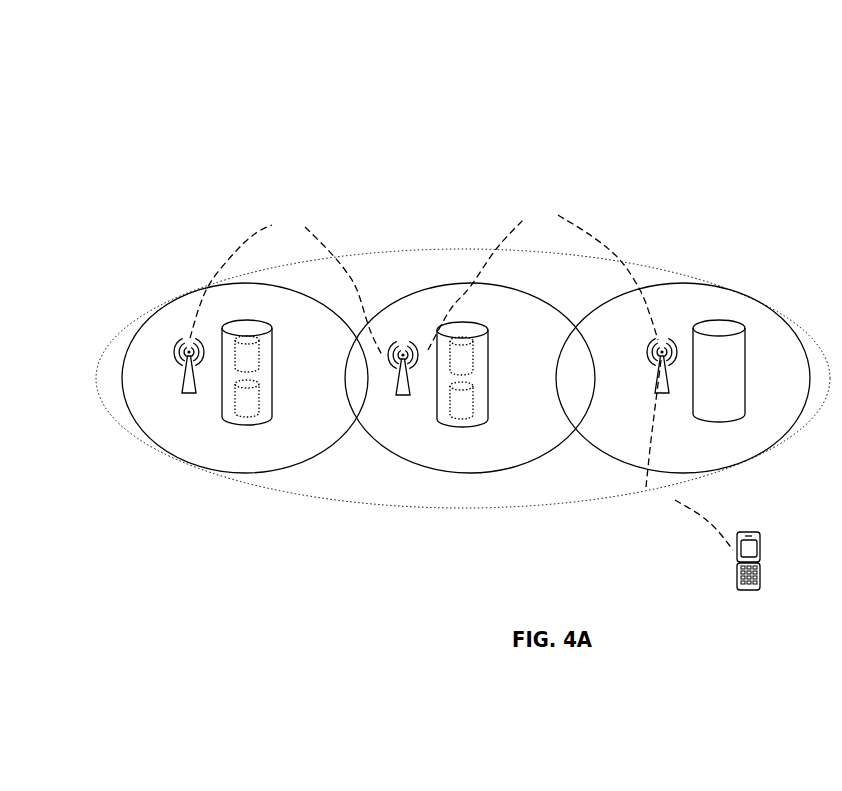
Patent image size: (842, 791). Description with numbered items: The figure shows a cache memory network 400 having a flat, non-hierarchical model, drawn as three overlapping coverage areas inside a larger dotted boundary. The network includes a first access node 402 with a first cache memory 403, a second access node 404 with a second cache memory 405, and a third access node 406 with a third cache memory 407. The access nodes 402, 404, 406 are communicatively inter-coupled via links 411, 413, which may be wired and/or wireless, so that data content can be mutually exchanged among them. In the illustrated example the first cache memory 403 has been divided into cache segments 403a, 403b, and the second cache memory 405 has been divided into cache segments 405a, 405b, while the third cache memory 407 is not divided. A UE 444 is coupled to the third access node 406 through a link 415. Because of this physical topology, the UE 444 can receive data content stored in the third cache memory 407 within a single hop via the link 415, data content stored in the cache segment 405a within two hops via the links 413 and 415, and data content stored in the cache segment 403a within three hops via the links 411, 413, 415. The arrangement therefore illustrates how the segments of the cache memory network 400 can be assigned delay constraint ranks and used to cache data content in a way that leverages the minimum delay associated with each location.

The cache memory network 400 is at (334, 109).
The first access node 402 is at (189, 380).
The first cache memory 403 is at (283, 387).
The cache segment 403a is at (259, 357).
The cache segment 403b is at (258, 398).
The second access node 404 is at (402, 383).
The second cache memory 405 is at (497, 389).
The cache segment 405a is at (473, 357).
The cache segment 405b is at (473, 398).
The third access node 406 is at (662, 381).
The third cache memory 407 is at (719, 387).
The link 411 is at (286, 286).
The link 413 is at (543, 277).
The link 415 is at (689, 455).
The UE 444 is at (749, 577).